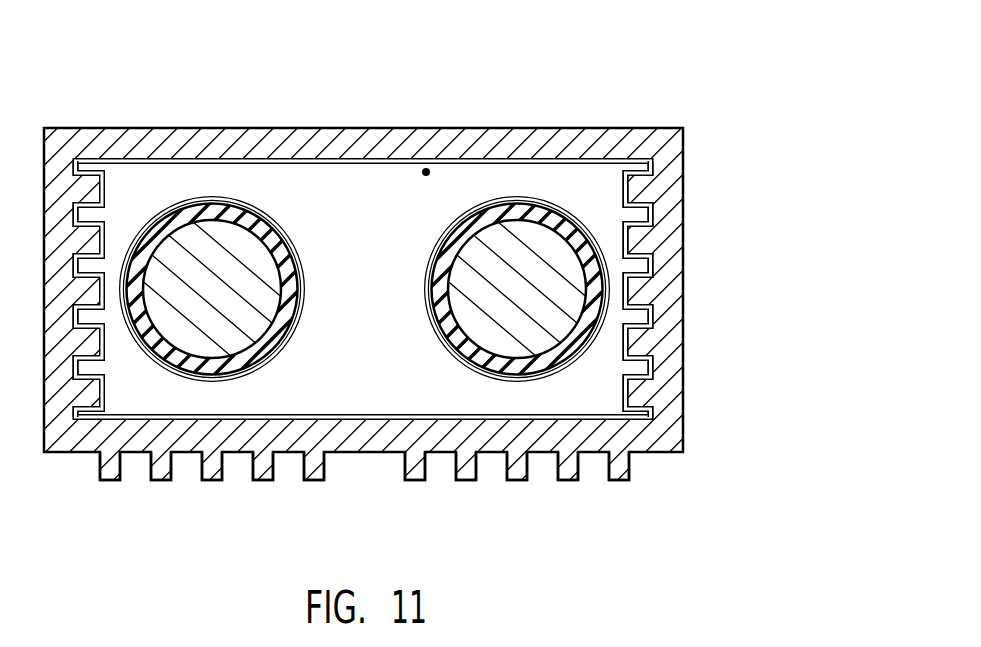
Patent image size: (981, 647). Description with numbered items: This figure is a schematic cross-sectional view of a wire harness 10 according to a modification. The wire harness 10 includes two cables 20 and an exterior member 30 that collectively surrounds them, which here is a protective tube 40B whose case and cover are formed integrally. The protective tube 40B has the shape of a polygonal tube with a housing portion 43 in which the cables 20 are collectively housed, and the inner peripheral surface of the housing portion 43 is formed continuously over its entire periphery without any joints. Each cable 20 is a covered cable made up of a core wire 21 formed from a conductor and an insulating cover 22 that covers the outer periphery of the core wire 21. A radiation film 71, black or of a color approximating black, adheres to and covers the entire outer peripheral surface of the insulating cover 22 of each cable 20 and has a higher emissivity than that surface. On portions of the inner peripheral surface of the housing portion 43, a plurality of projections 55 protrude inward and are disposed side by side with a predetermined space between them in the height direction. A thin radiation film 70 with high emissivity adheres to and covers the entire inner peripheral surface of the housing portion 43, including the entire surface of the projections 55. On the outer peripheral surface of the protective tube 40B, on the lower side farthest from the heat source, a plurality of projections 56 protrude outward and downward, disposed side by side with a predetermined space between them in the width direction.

The wire harness 10 is at (490, 283).
The exterior member 30 is at (490, 273).
The protective tube 40B is at (643, 127).
The housing portion 43 is at (426, 170).
The radiation film 70 is at (323, 165).
The projections 55 is at (104, 232).
The projections 56 is at (264, 476).
The cable 20 is at (364, 376).
The core wire 21 is at (200, 340).
The insulating cover 22 is at (142, 342).
The radiation film 71 is at (301, 308).